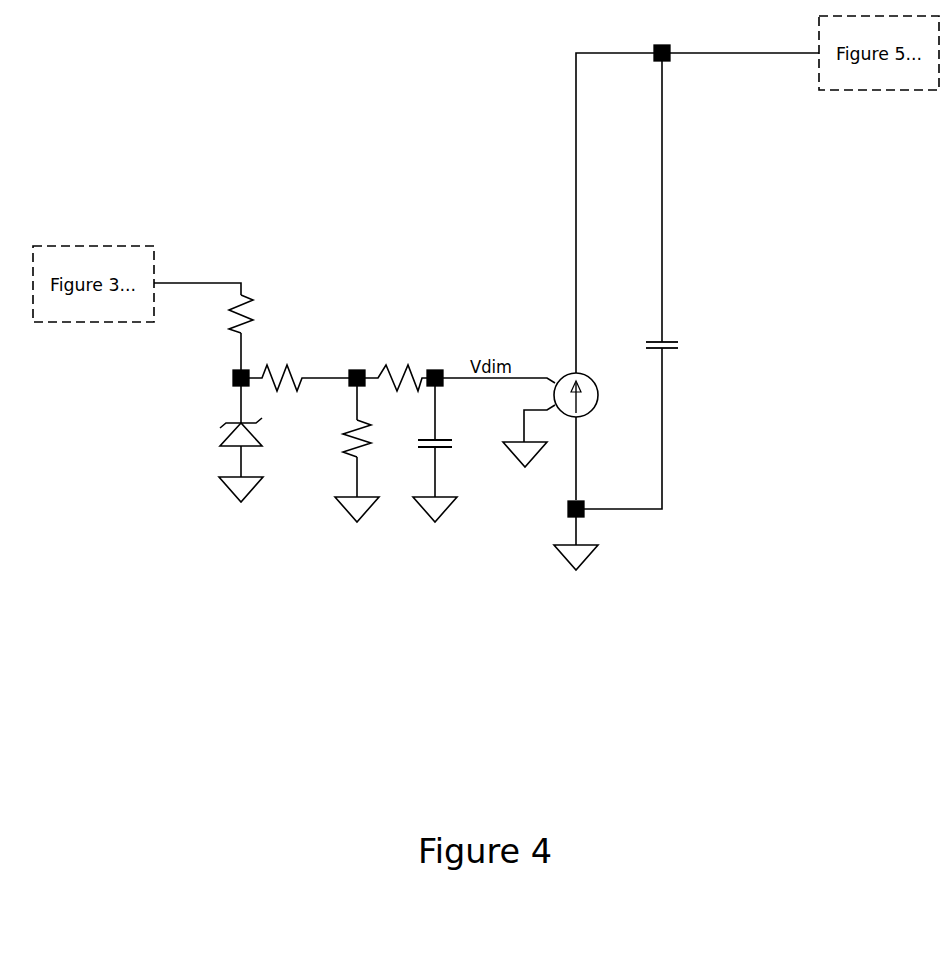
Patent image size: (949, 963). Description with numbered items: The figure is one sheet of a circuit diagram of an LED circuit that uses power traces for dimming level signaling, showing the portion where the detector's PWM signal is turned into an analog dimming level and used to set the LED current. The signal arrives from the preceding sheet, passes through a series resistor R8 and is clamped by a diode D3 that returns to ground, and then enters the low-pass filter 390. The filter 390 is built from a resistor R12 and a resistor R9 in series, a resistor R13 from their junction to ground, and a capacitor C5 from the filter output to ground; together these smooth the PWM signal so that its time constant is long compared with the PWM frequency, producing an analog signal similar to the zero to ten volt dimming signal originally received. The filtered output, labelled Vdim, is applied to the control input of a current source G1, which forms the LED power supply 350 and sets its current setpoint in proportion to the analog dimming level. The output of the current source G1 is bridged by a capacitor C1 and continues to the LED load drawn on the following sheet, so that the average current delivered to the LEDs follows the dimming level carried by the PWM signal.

The low-pass filter 390 is at (385, 600).
The LED power supply 350 is at (660, 610).
The resistor R8 4.7k R8 is at (260, 313).
The resistor R12 100k R12 is at (299, 378).
The resistor R9 100k R9 is at (396, 378).
The resistor R13 10k R13 is at (344, 454).
The capacitor C5 .47u C5 is at (449, 454).
The zener diode D3 is at (235, 444).
The controlled current source G1 is at (566, 411).
The capacitor C1 1600uF C1 is at (690, 216).